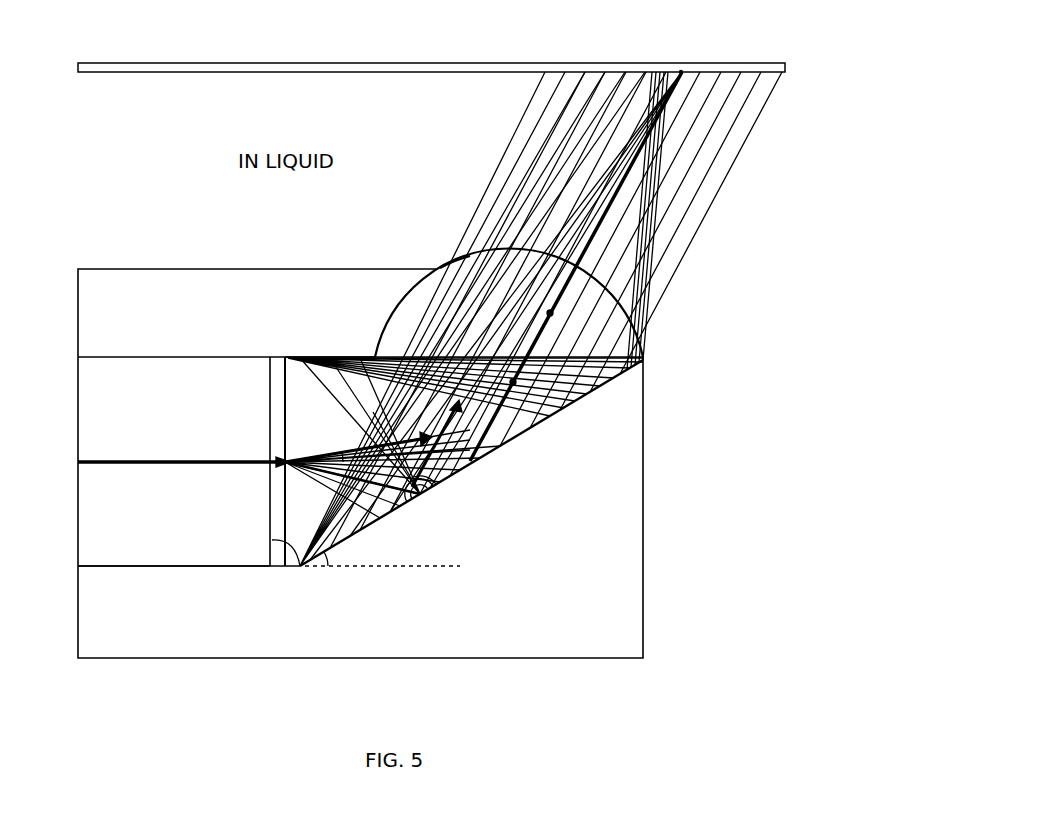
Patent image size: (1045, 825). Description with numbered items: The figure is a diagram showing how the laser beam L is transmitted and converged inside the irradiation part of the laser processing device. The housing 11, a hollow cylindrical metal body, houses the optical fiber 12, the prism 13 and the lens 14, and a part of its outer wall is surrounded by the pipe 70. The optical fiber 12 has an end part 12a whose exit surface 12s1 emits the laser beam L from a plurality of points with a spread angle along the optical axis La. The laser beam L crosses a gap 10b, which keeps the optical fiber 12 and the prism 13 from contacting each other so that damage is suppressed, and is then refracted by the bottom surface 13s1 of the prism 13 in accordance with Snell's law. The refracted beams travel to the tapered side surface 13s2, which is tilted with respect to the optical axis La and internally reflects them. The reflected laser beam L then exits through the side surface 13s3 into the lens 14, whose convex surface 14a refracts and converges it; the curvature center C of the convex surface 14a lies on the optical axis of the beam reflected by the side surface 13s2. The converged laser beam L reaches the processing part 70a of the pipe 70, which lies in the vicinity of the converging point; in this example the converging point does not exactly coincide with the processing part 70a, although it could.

The pipe 70 is at (787, 69).
The processing part 70a is at (681, 66).
The housing 11 is at (153, 290).
The optical fiber 12 is at (108, 488).
The end part 12a is at (220, 580).
The exit surface 12s1 is at (302, 568).
The gap 10b is at (276, 548).
The prism 13 is at (291, 370).
The bottom surface 13s1 is at (325, 505).
The side surface 13s2 is at (370, 532).
The side surface 13s3 is at (318, 352).
The lens 14 is at (417, 298).
The convex surface 14a is at (447, 258).
The optical axis La is at (135, 462).
The laser beam L is at (578, 140).
The curvature center C is at (516, 386).